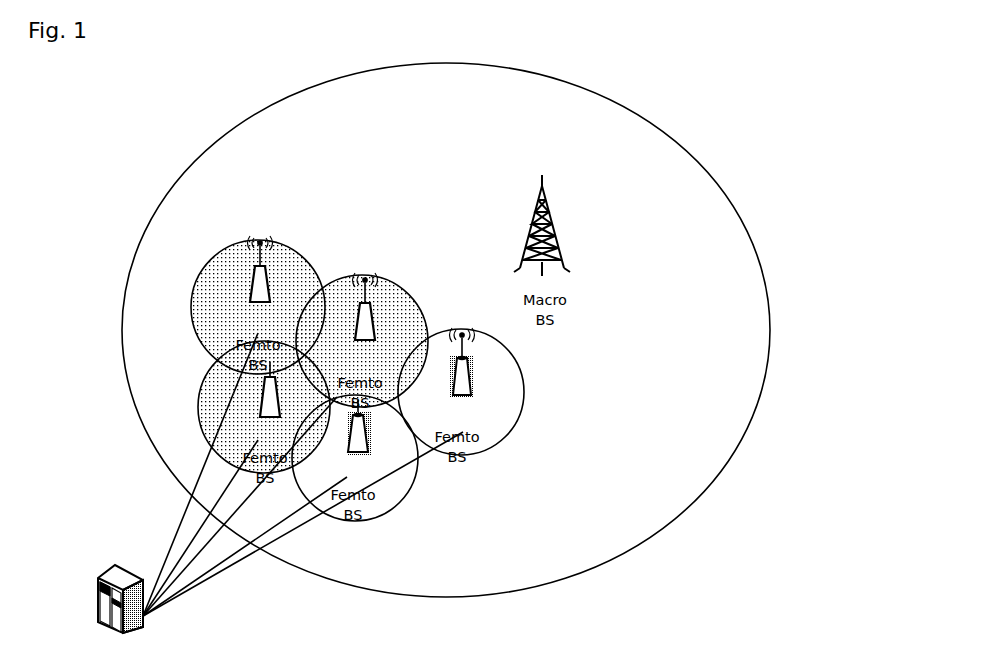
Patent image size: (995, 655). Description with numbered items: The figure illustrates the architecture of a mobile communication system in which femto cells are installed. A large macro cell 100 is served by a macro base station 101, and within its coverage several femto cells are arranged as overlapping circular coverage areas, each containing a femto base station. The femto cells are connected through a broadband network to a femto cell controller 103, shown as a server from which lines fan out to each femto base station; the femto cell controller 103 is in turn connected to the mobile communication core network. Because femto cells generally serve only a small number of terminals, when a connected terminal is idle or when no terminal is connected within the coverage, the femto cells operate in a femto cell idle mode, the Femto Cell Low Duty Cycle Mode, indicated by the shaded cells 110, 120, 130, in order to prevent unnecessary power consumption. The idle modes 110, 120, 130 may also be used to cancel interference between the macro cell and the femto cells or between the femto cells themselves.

The macro cell 100 is at (641, 111).
The macro base station 101 is at (547, 190).
The femto cell controller 103 is at (99, 574).
The femto cell idle mode 110 is at (270, 237).
The femto cell idle mode 120 is at (375, 274).
The femto cell idle mode 130 is at (197, 409).